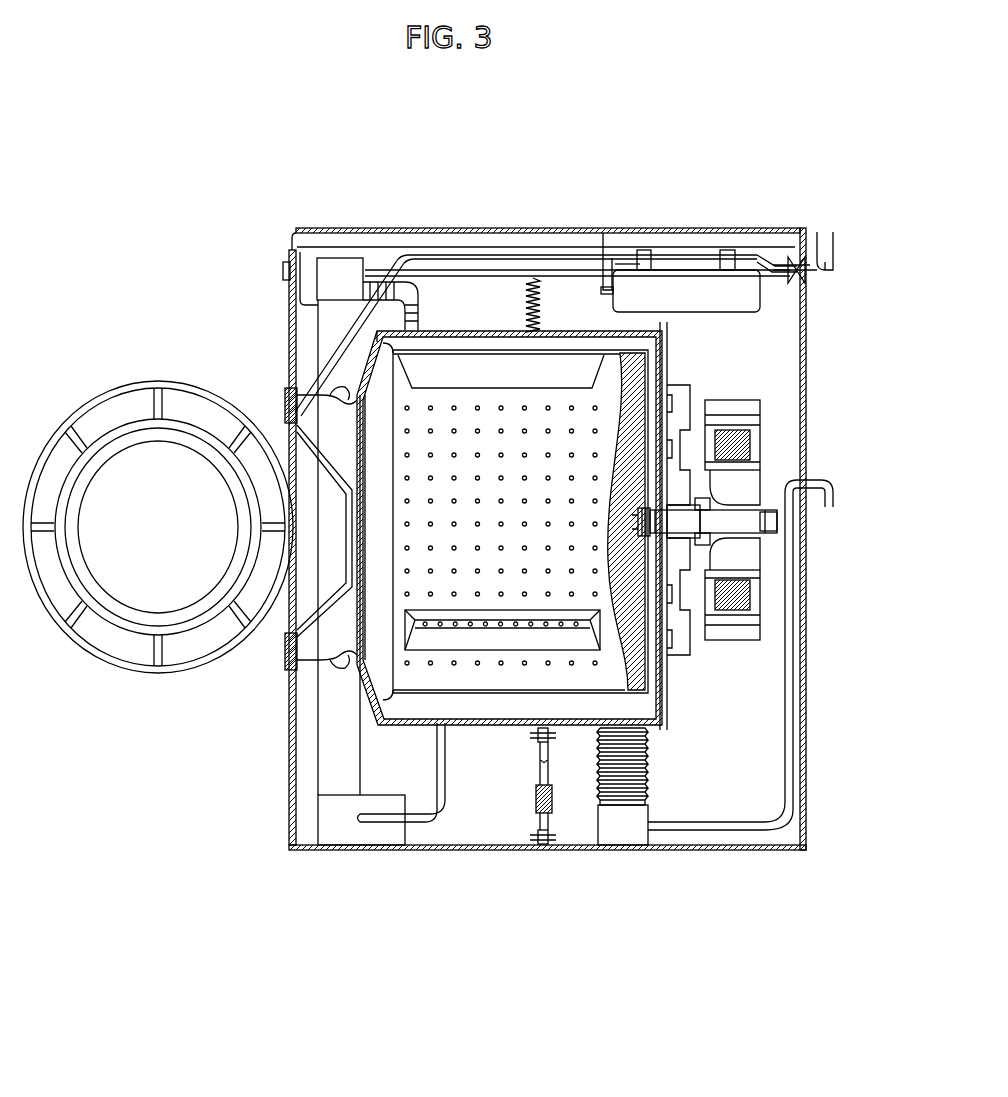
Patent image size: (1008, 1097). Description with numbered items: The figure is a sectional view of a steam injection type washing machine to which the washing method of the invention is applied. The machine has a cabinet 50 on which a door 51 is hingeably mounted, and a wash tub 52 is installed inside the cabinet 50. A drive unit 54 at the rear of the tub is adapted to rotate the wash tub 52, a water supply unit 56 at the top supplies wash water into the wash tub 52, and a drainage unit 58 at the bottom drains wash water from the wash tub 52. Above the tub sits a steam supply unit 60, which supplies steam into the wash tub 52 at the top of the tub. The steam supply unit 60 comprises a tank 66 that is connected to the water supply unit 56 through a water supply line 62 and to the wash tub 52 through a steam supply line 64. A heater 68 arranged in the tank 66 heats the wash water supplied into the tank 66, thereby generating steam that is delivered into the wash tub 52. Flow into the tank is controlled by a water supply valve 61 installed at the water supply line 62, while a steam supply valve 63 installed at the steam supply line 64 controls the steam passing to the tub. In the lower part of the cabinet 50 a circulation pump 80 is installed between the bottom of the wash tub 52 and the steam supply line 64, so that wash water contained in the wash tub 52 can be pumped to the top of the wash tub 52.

The cabinet 50 is at (808, 632).
The door 51 is at (148, 588).
The wash tub 52 is at (643, 397).
The drive unit 54 is at (772, 442).
The water supply unit 56 is at (800, 273).
The drainage unit 58 is at (668, 826).
The steam supply unit 60 is at (687, 222).
The water supply valve 61 is at (724, 246).
The water supply line 62 is at (772, 222).
The steam supply valve 63 is at (644, 258).
The steam supply line 64 is at (617, 255).
The tank 66 is at (683, 286).
The heater 68 is at (607, 287).
The circulation pump 80 is at (350, 825).